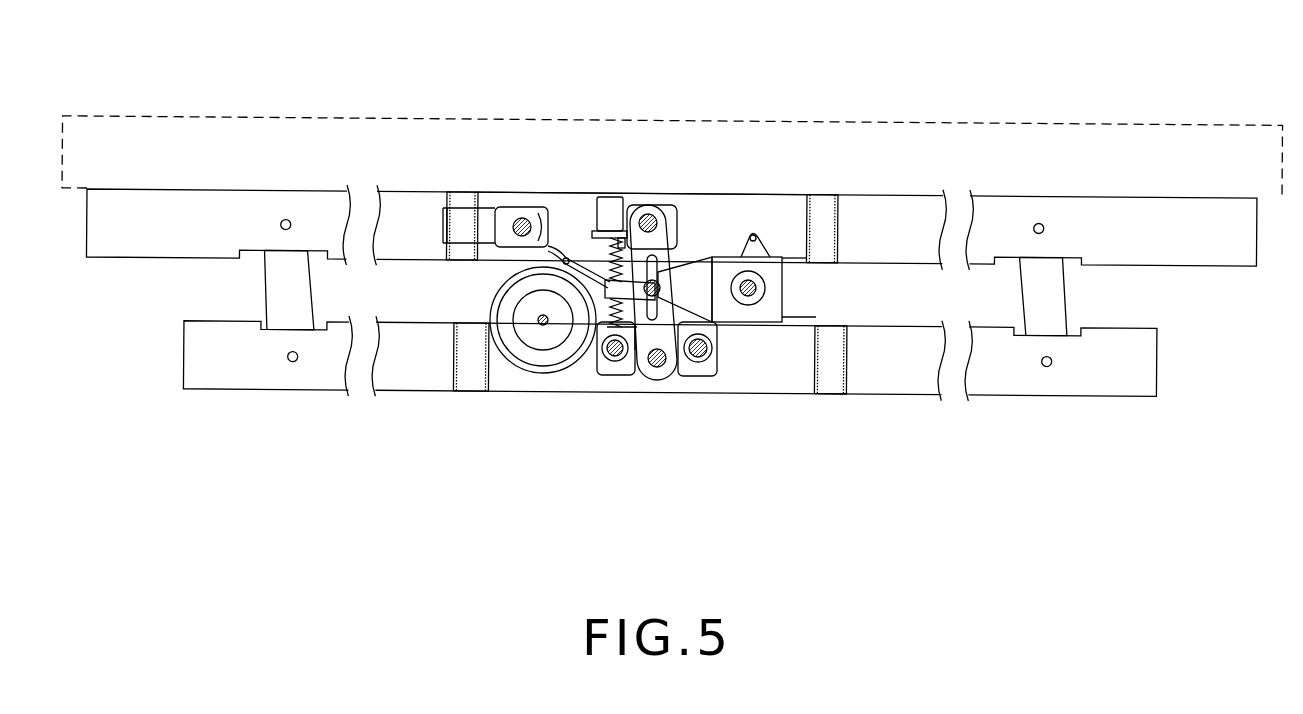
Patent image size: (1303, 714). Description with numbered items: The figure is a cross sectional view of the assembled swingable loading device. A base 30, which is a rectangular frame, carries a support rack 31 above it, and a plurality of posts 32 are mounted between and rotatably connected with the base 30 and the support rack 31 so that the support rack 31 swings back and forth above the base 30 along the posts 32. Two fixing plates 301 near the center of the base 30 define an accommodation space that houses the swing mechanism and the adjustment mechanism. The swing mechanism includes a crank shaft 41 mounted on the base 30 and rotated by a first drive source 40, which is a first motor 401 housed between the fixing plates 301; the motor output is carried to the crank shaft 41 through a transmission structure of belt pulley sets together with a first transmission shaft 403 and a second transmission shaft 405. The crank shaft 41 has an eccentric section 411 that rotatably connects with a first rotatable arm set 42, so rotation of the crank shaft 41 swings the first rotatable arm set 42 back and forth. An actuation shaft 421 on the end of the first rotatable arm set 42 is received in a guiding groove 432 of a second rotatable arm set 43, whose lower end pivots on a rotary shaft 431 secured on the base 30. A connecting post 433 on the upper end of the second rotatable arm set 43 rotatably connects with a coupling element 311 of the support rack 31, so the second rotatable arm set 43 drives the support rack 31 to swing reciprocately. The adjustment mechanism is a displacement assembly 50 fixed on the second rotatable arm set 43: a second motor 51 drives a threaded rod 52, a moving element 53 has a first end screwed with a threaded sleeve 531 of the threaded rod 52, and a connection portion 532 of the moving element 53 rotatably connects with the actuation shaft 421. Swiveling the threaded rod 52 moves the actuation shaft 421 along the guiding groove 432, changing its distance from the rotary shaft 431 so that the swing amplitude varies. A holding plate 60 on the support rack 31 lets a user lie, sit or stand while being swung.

The base 30 is at (993, 397).
The fixing plates 301 is at (795, 329).
The support rack 31 is at (1013, 197).
The coupling element 311 is at (543, 199).
The posts 32 is at (282, 287).
The first drive source 40 is at (515, 368).
The first motor 401 is at (547, 372).
The first transmission shaft 403 is at (603, 352).
The second transmission shaft 405 is at (702, 349).
The crank shaft 41 is at (745, 286).
The eccentric section 411 is at (756, 235).
The first rotatable arm set 42 is at (680, 216).
The actuation shaft 421 is at (700, 256).
The second rotatable arm set 43 is at (677, 330).
The rotary shaft 431 is at (632, 303).
The guiding groove 432 is at (660, 370).
The connecting post 433 is at (647, 220).
The displacement assembly 50 is at (587, 197).
The second motor 51 is at (608, 200).
The threaded rod 52 is at (522, 226).
The moving element 53 is at (615, 374).
The threaded sleeve 531 is at (556, 255).
The connection portion 532 is at (655, 222).
The holding plate 60 is at (1137, 122).